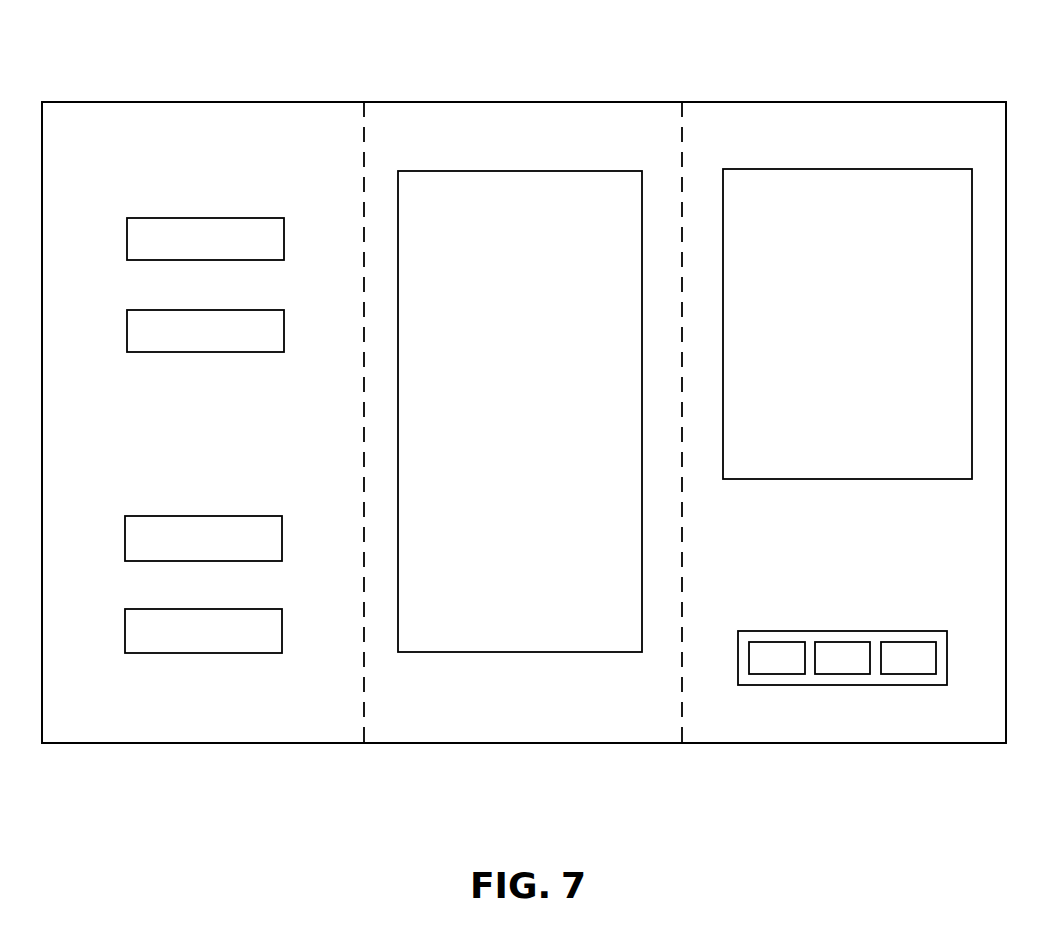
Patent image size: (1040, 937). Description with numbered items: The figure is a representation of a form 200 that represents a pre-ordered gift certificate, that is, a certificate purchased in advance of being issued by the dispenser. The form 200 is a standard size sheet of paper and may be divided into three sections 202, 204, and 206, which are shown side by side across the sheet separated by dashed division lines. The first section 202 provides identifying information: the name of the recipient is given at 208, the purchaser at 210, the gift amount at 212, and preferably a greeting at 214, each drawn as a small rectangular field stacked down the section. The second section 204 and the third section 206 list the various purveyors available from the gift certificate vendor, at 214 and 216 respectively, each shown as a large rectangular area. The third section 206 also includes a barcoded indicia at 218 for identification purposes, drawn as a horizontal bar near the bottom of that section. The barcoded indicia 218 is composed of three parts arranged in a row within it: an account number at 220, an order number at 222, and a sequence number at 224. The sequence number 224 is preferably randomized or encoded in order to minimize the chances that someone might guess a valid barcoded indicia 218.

The form 200 is at (618, 98).
The section 202 is at (168, 690).
The section 204 is at (493, 690).
The section 206 is at (843, 702).
The name of the recipient 208 is at (235, 216).
The purchaser 210 is at (247, 354).
The gift amount 212 is at (167, 515).
The greeting 214 is at (232, 654).
The purveyors listing 216 is at (847, 299).
The barcoded indicia 218 is at (807, 630).
The account number 220 is at (773, 657).
The order number 222 is at (843, 653).
The sequence number 224 is at (908, 653).